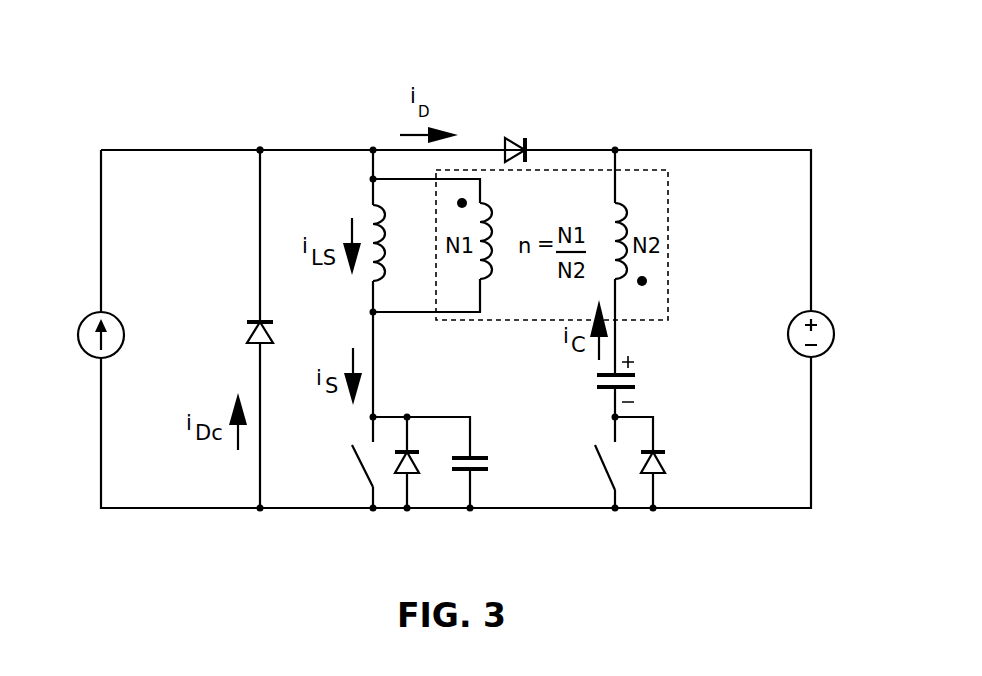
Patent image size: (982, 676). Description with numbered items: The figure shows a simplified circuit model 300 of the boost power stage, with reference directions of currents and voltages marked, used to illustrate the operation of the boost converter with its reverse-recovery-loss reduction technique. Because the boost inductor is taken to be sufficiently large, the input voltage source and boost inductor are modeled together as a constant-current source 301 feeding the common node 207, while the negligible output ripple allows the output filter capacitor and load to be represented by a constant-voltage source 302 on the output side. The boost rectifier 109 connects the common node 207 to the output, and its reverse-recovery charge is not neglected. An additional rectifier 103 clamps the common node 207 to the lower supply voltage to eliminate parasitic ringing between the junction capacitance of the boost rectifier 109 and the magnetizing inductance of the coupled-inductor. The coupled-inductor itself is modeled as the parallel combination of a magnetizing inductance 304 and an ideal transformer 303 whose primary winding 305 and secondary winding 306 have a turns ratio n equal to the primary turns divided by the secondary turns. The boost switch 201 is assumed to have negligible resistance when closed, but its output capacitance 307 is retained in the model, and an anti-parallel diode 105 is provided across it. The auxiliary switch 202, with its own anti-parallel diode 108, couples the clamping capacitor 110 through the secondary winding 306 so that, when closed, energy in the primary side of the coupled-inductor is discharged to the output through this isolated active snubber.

The simplified circuit model 300 is at (545, 37).
The common node 207 is at (261, 147).
The constant-current source 301 is at (114, 316).
The constant-voltage source 302 is at (824, 318).
The additional rectifier 103 is at (272, 329).
The boost rectifier 109 is at (529, 140).
The magnetizing inductance 304 is at (372, 215).
The ideal transformer 303 is at (505, 322).
The primary winding 305 is at (491, 218).
The secondary winding 306 is at (622, 219).
The clamping capacitor 110 is at (633, 372).
The boost switch 201 is at (364, 463).
The anti-parallel diode 105 is at (413, 463).
The output capacitance 307 is at (483, 453).
The auxiliary switch 202 is at (595, 457).
The anti-parallel diode 108 is at (665, 466).